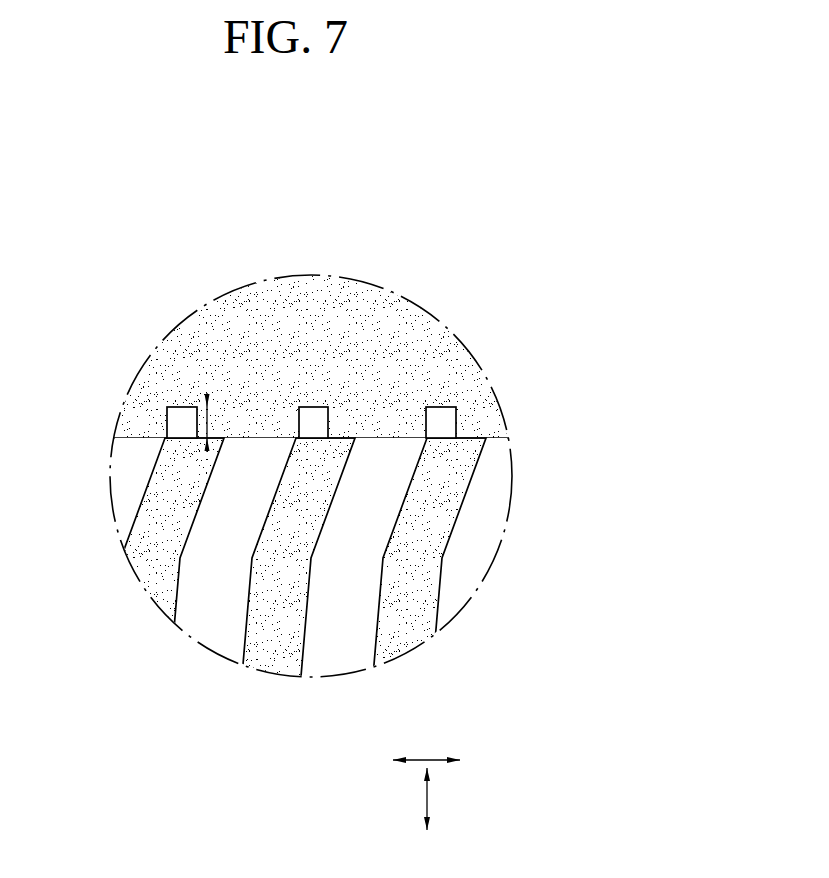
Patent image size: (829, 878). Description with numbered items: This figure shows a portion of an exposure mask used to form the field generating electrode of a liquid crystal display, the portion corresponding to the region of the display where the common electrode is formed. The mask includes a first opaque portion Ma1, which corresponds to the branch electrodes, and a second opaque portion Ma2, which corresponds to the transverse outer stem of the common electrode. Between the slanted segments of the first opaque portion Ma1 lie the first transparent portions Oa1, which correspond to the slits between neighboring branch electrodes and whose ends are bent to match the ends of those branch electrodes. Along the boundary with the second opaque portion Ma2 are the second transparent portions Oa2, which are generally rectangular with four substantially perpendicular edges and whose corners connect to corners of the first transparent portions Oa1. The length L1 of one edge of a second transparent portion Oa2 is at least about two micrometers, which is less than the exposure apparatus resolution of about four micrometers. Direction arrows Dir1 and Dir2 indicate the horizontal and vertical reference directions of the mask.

The second opaque portion Ma2 is at (385, 363).
The first opaque portion Ma1 is at (300, 525).
The first transparent portions Oa1 is at (250, 483).
The second transparent portions Oa2 is at (185, 418).
The length of one edge L1 is at (219, 422).
The first direction Dir1 is at (448, 762).
The second direction Dir2 is at (451, 799).